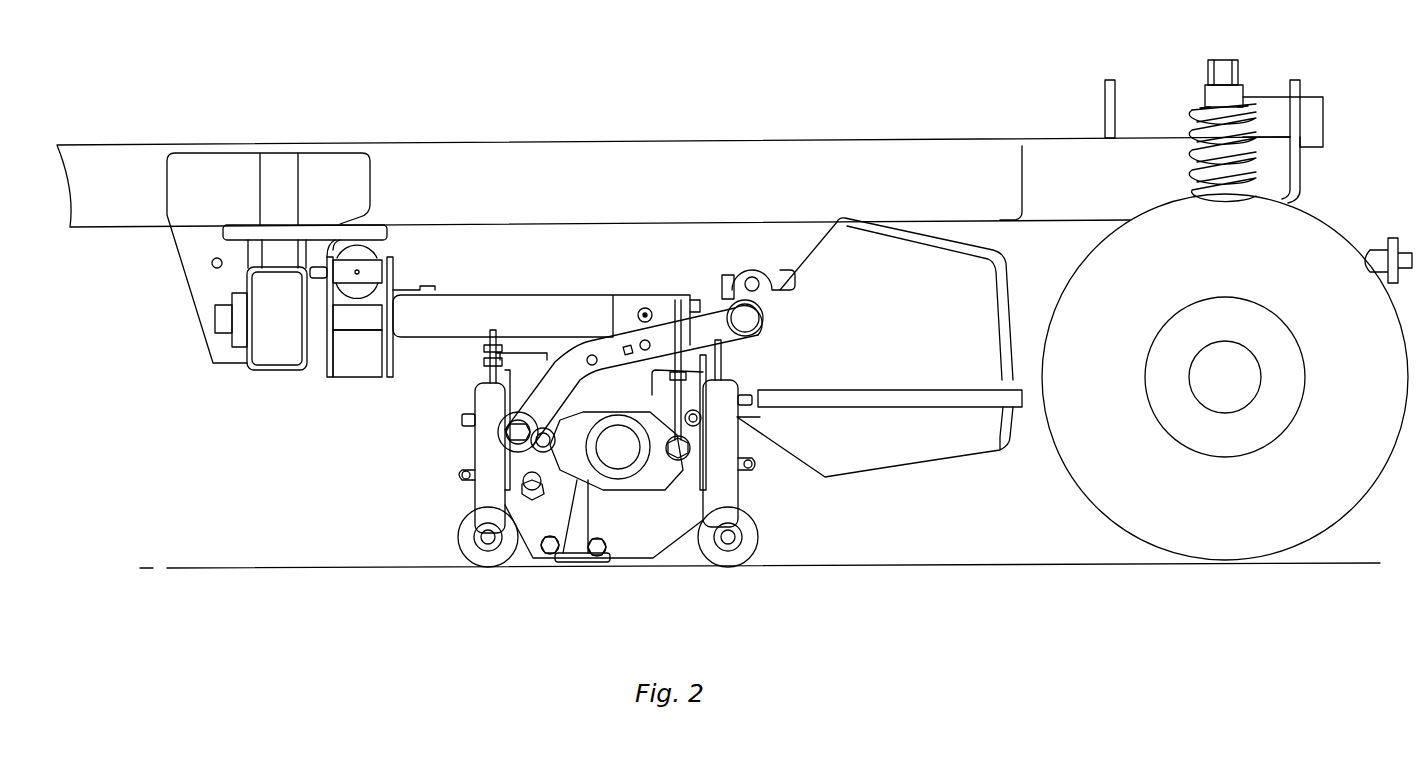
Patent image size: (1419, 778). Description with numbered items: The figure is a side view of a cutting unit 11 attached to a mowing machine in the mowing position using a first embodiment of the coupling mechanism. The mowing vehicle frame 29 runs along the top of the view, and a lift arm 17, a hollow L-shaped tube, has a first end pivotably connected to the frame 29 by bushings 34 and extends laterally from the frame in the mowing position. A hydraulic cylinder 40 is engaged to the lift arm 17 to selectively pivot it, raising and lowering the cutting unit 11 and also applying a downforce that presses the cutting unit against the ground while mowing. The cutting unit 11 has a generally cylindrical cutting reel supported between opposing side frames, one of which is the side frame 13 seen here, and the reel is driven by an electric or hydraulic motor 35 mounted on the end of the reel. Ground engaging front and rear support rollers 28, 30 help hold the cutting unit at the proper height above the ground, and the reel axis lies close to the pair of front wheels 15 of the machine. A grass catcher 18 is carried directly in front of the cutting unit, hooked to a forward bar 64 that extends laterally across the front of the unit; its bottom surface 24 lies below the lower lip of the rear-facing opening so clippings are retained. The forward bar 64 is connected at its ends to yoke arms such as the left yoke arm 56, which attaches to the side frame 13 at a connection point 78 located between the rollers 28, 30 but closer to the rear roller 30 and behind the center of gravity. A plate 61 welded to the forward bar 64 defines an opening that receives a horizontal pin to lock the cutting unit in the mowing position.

The mowing vehicle frame 29 is at (112, 163).
The hydraulic cylinder 40 is at (362, 253).
The bushings 34 is at (273, 322).
The lift arm 17 is at (480, 304).
The side frame 13 is at (610, 392).
The left yoke arm 56 is at (665, 328).
The plate 61 is at (752, 277).
The grass catcher 18 is at (910, 260).
The forward bar 64 is at (748, 318).
The connection point 78 is at (478, 436).
The cutting unit 11 is at (426, 464).
The motor 35 is at (622, 458).
The rear support roller 30 is at (457, 532).
The front support roller 28 is at (757, 535).
The bottom surface 24 is at (885, 470).
The front wheels 15 is at (1107, 500).